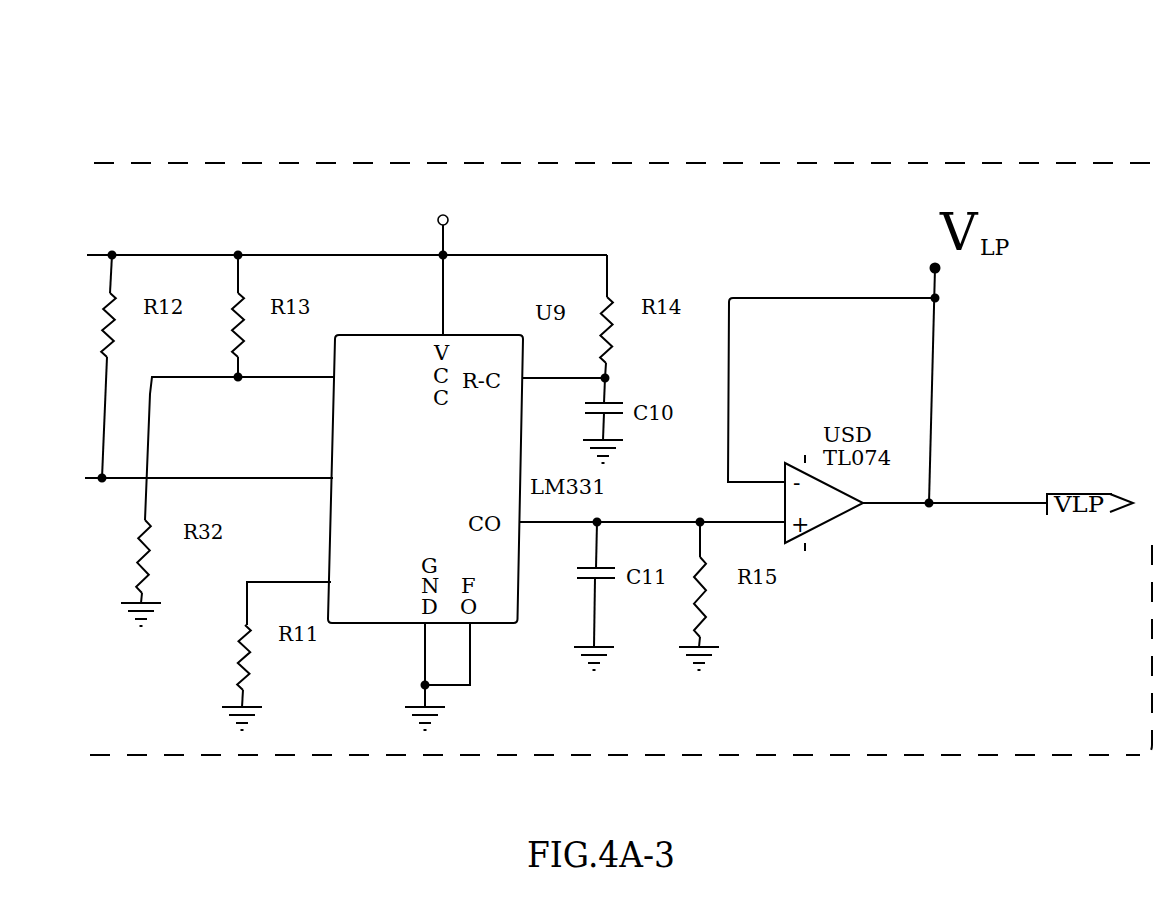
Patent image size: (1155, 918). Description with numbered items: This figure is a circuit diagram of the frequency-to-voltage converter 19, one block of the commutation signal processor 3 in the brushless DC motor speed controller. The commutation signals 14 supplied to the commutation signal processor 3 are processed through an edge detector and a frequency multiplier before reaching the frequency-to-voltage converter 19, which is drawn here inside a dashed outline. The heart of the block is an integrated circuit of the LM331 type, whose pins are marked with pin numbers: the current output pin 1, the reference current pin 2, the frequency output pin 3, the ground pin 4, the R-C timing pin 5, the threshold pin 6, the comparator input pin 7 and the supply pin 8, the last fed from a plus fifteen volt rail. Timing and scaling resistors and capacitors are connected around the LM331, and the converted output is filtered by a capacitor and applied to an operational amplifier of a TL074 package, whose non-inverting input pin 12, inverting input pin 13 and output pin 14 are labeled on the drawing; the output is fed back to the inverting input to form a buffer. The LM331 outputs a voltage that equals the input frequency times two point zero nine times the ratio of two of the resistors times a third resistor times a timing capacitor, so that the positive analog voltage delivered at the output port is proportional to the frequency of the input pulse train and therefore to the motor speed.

The frequency-to-voltage converter 19 is at (504, 163).
The LM331 current output pin 1 is at (611, 512).
The LM331 reference current pin 2 is at (323, 592).
The commutation signal processor 3 is at (468, 654).
The LM331 ground pin 4 is at (426, 676).
The LM331 R-C timing pin 5 is at (565, 367).
The LM331 threshold pin 6 is at (230, 472).
The LM331 comparator input pin 7 is at (257, 435).
The LM331 VCC supply pin 8 is at (442, 263).
The op amp non-inverting input pin 12 is at (742, 513).
The op amp inverting input pin 13 is at (833, 389).
The commutation signals 14 is at (955, 385).